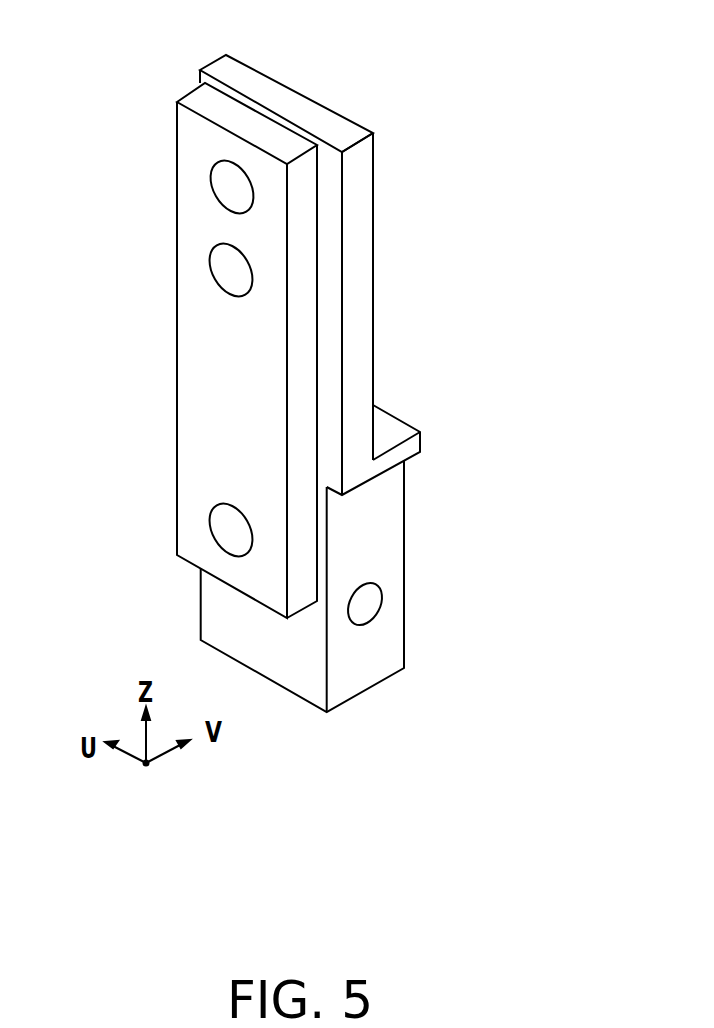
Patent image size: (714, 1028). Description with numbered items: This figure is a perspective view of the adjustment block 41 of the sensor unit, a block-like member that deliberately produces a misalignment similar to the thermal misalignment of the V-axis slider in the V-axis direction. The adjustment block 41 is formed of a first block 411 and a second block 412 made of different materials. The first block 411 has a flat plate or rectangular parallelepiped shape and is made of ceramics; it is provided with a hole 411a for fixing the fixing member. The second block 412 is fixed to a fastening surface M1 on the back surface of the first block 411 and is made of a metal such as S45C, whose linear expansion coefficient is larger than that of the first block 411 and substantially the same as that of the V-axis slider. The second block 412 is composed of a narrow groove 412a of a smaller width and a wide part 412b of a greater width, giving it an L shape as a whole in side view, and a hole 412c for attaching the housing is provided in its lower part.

The adjustment block 41 is at (293, 41).
The first block 411 is at (187, 350).
The hole 411a is at (213, 258).
The second block 412 is at (366, 383).
The narrow groove 412a is at (373, 317).
The wide part 412b is at (367, 558).
The hole 412c is at (358, 617).
The fastening surface M1 is at (323, 143).